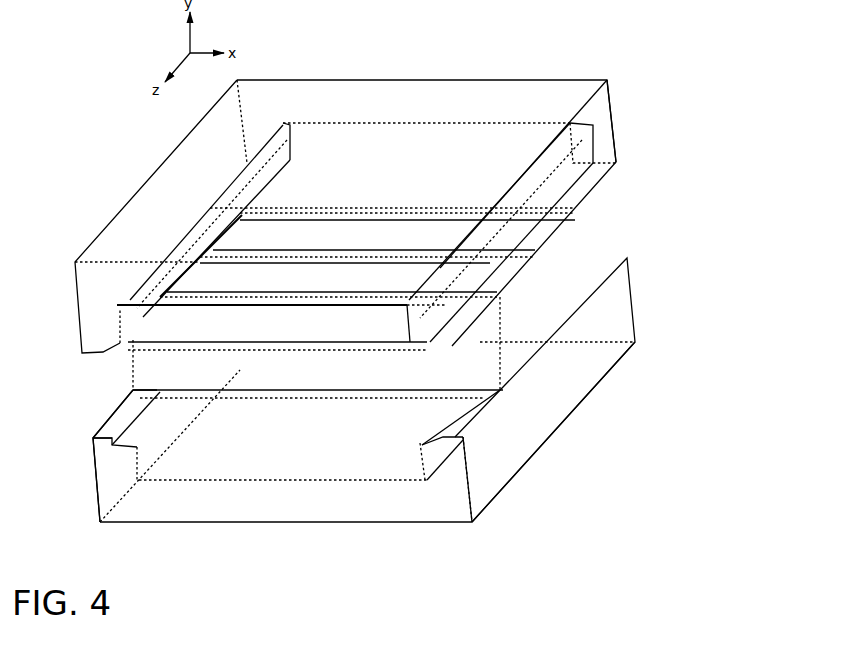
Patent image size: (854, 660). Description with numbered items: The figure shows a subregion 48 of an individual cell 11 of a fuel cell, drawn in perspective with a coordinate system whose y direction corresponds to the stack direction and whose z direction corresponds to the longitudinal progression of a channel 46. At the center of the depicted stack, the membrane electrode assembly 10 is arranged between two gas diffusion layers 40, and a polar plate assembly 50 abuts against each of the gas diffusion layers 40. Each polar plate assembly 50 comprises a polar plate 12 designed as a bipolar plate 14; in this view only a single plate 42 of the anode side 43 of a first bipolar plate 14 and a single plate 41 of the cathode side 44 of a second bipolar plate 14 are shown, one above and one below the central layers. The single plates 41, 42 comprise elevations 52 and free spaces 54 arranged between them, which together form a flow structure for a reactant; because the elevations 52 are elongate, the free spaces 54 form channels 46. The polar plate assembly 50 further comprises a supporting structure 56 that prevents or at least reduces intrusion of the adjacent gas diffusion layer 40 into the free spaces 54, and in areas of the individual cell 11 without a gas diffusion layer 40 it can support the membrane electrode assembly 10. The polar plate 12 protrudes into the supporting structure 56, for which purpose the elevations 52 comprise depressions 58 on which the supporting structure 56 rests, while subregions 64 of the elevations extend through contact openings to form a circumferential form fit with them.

The membrane electrode assembly 10 is at (406, 239).
The individual cell 11 is at (428, 176).
The subregion 48 is at (527, 57).
The polar plate 12 is at (409, 275).
The bipolar plate 14 is at (409, 275).
The single plate 42 is at (428, 176).
The anode side 43 is at (428, 176).
The single plate 41 is at (379, 404).
The cathode side 44 is at (535, 452).
The gas diffusion layer 40 is at (568, 235).
The polar plate assembly 50 is at (618, 127).
The elevation 52 is at (117, 477).
The supporting structure 56 is at (278, 308).
The channel 46 is at (318, 477).
The free space 54 is at (372, 450).
The depression 58 is at (152, 413).
The subregion of elevation 64 is at (107, 430).